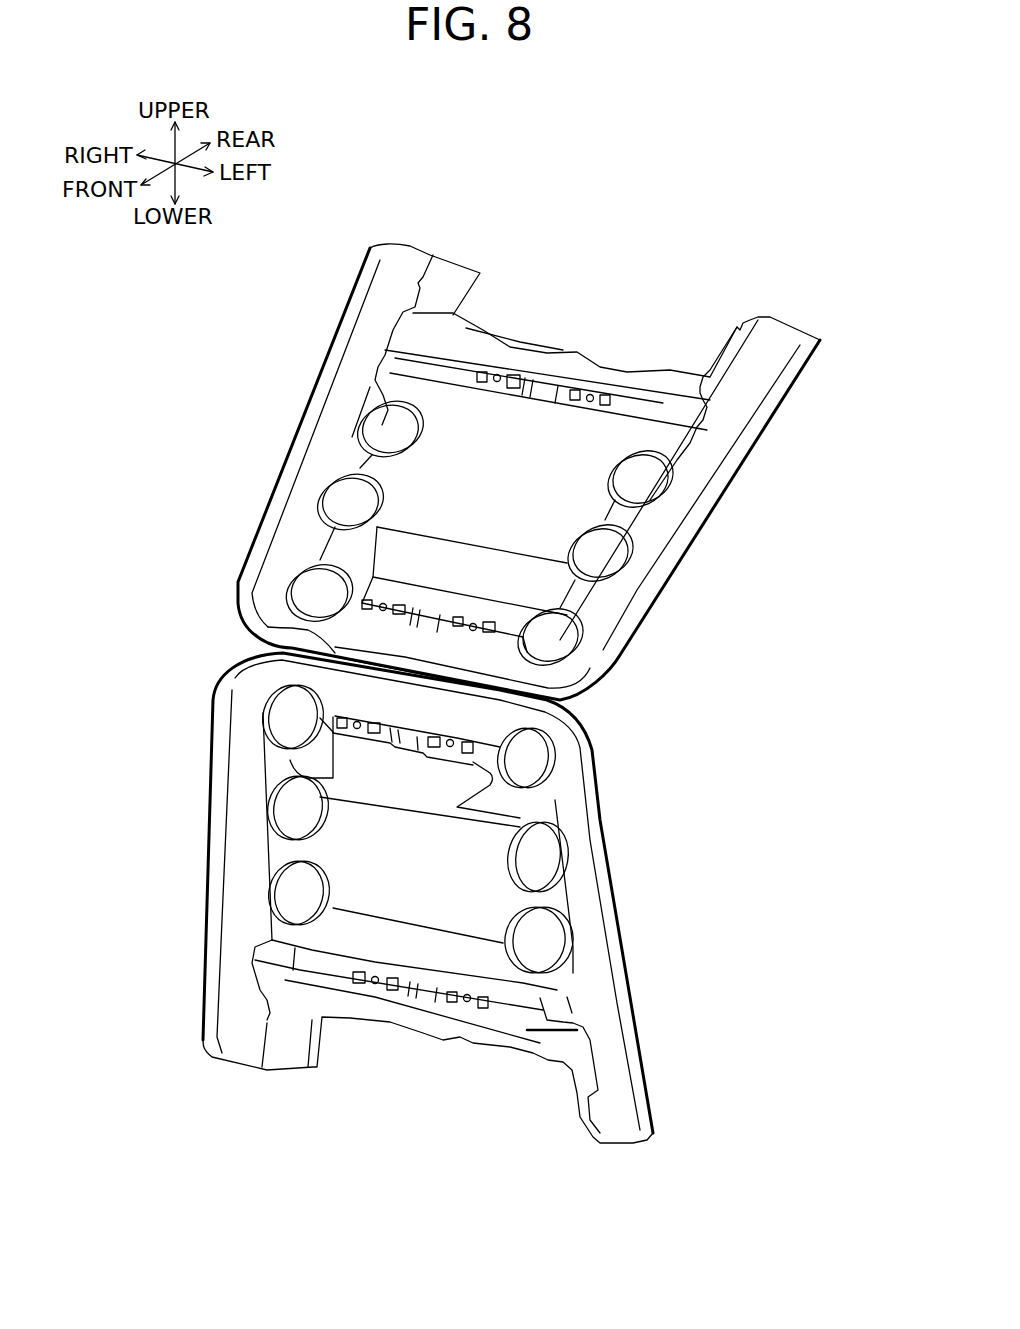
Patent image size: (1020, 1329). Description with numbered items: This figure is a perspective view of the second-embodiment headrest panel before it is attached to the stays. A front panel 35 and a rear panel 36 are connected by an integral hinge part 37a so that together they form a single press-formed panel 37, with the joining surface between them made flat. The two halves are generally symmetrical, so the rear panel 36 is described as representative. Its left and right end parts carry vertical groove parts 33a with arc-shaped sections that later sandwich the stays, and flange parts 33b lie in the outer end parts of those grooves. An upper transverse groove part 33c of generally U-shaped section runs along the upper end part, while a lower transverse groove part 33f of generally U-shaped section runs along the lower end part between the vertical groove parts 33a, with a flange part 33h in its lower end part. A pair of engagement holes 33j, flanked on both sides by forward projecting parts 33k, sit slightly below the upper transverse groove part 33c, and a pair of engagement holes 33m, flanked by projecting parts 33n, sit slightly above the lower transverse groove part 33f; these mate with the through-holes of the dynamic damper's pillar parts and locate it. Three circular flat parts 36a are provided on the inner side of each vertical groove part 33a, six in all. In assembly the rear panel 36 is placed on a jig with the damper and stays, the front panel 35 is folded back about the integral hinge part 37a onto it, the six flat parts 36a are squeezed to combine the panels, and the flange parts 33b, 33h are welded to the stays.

The vertical groove part 33a is at (380, 305).
The flange part 33b is at (313, 382).
The upper transverse groove part 33c is at (355, 623).
The lower transverse groove part 33f is at (620, 382).
The flange part 33h is at (537, 343).
The engagement hole 33j is at (497, 372).
The projecting part 33k is at (482, 385).
The engagement hole 33m is at (500, 673).
The projecting part 33n is at (367, 600).
The front panel 35 is at (441, 880).
The rear panel 36 is at (512, 482).
The circular flat part 36a is at (392, 433).
The panel 37 is at (511, 693).
The integral hinge part 37a is at (275, 617).